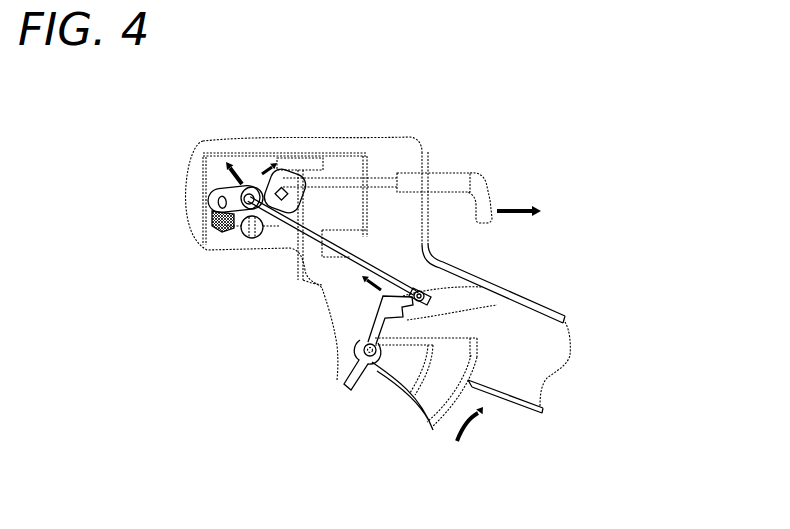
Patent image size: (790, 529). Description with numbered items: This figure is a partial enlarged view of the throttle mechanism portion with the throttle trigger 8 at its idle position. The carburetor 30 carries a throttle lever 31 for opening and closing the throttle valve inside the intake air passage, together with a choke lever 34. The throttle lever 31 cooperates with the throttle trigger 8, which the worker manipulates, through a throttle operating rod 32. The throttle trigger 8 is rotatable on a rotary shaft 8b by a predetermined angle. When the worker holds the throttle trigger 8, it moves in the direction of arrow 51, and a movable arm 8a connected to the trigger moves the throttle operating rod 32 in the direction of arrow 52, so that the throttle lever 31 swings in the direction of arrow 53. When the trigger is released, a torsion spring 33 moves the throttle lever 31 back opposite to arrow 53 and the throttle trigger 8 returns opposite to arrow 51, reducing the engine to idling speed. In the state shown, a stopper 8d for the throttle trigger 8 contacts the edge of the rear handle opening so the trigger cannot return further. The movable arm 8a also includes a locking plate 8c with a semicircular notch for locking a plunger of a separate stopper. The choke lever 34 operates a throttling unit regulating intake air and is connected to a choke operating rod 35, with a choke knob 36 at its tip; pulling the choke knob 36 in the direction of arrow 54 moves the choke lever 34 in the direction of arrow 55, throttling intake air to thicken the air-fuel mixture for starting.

The throttle trigger 8 is at (443, 432).
The movable arm 8a is at (487, 287).
The rotary shaft 8b is at (335, 371).
The locking plate 8c is at (497, 305).
The stopper 8d is at (500, 370).
The carburetor 30 is at (200, 247).
The throttle lever 31 is at (263, 170).
The throttle operating rod 32 is at (373, 260).
The torsion spring 33 is at (242, 240).
The choke lever 34 is at (288, 172).
The choke operating rod 35 is at (350, 173).
The choke knob 36 is at (481, 172).
The arrow 51 is at (478, 427).
The arrow 52 is at (370, 280).
The arrow 53 is at (230, 162).
The arrow 54 is at (518, 203).
The arrow 55 is at (266, 172).